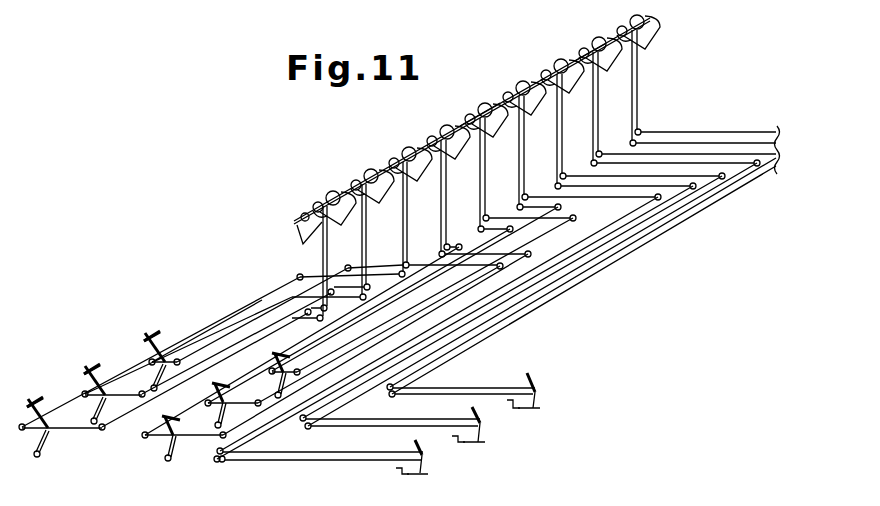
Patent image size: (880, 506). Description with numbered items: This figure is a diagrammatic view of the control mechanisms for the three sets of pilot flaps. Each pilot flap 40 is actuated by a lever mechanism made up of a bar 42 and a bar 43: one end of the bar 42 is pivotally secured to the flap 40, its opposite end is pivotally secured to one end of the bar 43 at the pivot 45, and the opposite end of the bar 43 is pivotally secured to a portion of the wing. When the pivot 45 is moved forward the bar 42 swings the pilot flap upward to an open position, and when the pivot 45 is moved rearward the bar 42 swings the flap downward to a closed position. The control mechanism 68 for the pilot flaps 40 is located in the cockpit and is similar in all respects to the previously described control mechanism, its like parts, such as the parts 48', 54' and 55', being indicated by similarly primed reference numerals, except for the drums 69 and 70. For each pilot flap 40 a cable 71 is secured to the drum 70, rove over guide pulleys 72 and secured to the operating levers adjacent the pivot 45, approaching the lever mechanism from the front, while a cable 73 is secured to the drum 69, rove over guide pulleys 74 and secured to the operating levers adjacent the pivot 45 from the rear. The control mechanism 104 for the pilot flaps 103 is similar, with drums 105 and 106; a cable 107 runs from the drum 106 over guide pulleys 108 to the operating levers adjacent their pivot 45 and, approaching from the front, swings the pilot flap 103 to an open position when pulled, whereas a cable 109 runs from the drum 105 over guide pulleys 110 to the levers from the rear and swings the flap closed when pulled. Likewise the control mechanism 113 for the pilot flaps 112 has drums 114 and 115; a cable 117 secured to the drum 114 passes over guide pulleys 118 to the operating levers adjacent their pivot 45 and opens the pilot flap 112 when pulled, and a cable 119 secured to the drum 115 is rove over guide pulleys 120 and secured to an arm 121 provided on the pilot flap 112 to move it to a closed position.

The pilot flap 40 is at (150, 344).
The bar 42 is at (153, 339).
The bar 43 is at (156, 374).
The pivot 45 is at (534, 390).
The connecting rod 48' is at (322, 263).
The disc 54' is at (290, 212).
The blade 55' is at (296, 232).
The control mechanism 68 is at (376, 149).
The drum 69 is at (402, 150).
The drum 70 is at (414, 145).
The cable 71 is at (75, 390).
The guide pulleys 72 is at (402, 274).
The cable 73 is at (196, 360).
The guide pulleys 74 is at (102, 431).
The pilot flaps 103 is at (279, 351).
The control mechanism 104 is at (473, 100).
The drum 105 is at (516, 90).
The drum 106 is at (534, 80).
The cable 107 is at (318, 340).
The guide pulleys 108 is at (144, 432).
The cable 109 is at (374, 333).
The guide pulleys 110 is at (528, 254).
The pilot flaps 112 is at (415, 476).
The control mechanism 113 is at (587, 35).
The drum 114 is at (640, 16).
The drum 115 is at (645, 26).
The cable 117 is at (318, 456).
The guide pulleys 118 is at (217, 454).
The cable 119 is at (288, 462).
The guide pulleys 120 is at (219, 463).
The arm 121 is at (394, 473).